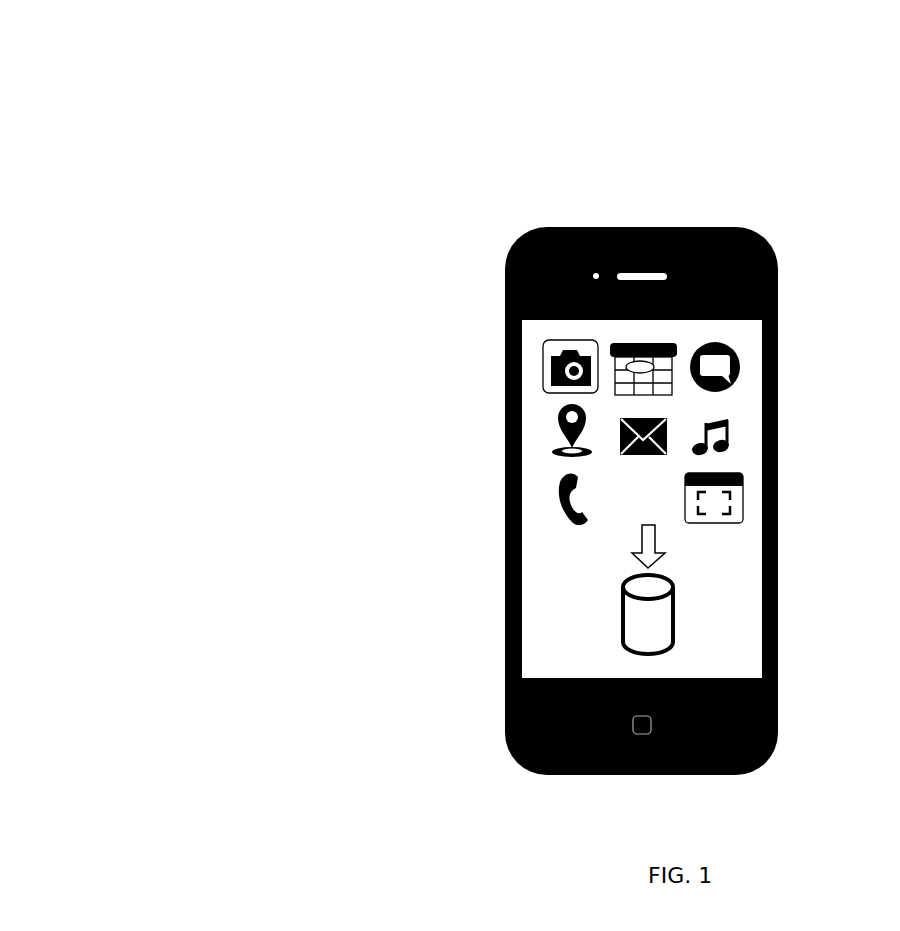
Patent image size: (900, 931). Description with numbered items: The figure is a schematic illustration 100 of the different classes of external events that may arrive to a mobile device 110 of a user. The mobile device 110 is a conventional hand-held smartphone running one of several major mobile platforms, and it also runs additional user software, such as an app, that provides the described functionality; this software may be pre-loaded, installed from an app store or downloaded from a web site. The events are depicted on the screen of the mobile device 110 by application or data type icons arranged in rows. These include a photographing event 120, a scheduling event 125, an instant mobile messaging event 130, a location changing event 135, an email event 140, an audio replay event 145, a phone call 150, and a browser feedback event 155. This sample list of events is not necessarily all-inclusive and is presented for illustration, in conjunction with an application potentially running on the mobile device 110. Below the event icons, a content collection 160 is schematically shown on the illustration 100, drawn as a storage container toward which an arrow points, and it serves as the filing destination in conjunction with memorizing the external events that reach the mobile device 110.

The schematic illustration 100 is at (192, 126).
The mobile device 110 is at (640, 205).
The photographing event 120 is at (537, 353).
The scheduling event 125 is at (553, 340).
The instant mobile messaging event 130 is at (742, 362).
The location changing event 135 is at (542, 440).
The email event 140 is at (673, 455).
The audio replay event 145 is at (740, 435).
The phone call 150 is at (553, 515).
The browser feedback event 155 is at (745, 500).
The content collection 160 is at (623, 630).